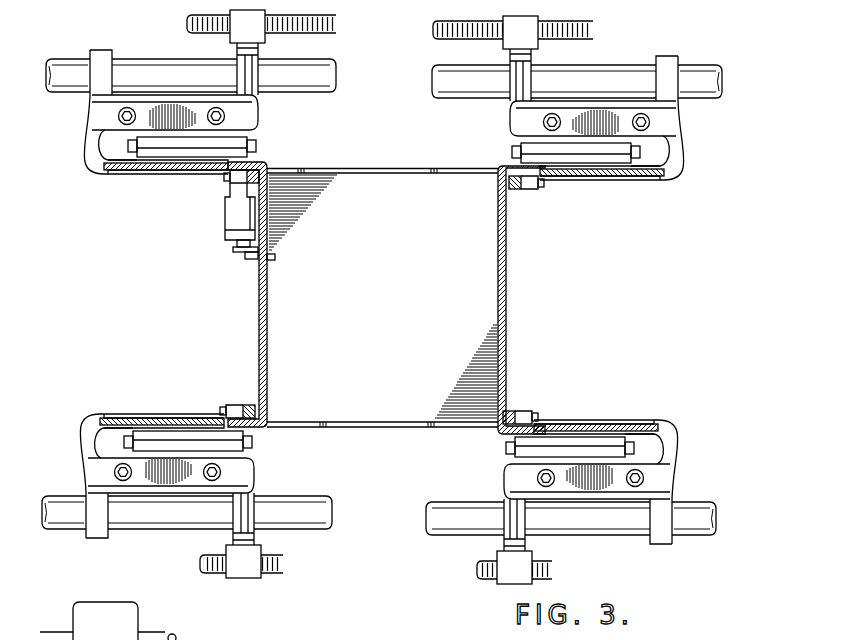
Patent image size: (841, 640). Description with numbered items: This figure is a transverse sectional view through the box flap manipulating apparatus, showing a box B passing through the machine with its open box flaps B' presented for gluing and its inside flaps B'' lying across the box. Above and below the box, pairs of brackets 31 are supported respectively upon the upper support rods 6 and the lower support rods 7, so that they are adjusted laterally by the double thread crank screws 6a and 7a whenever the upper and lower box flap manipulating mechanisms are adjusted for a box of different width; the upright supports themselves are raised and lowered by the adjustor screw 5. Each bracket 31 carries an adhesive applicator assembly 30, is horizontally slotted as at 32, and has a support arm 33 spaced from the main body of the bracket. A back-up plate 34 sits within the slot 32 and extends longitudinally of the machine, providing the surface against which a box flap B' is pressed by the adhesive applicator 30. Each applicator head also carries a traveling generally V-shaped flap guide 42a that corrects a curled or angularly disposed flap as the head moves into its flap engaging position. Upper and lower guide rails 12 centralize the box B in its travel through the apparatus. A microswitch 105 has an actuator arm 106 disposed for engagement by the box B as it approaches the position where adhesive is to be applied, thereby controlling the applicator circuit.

The adjustor screw 5 is at (187, 636).
The support rods 6 is at (712, 83).
The double thread crank screw 6a is at (311, 24).
The support rods 7 is at (701, 528).
The double thread crank screw 7a is at (553, 572).
The guide rails 12 is at (516, 191).
The adhesive applicator assembly 30 is at (260, 155).
The bracket 31 is at (92, 112).
The slot 32 is at (98, 160).
The support arm 33 is at (129, 173).
The back-up plate 34 is at (152, 172).
The traveling V-shaped flap guide 42a is at (606, 160).
The microswitch 105 is at (236, 214).
The actuator arm 106 is at (246, 256).
The box B is at (391, 298).
The box flap B' is at (382, 297).
The inside flaps B'' is at (382, 297).